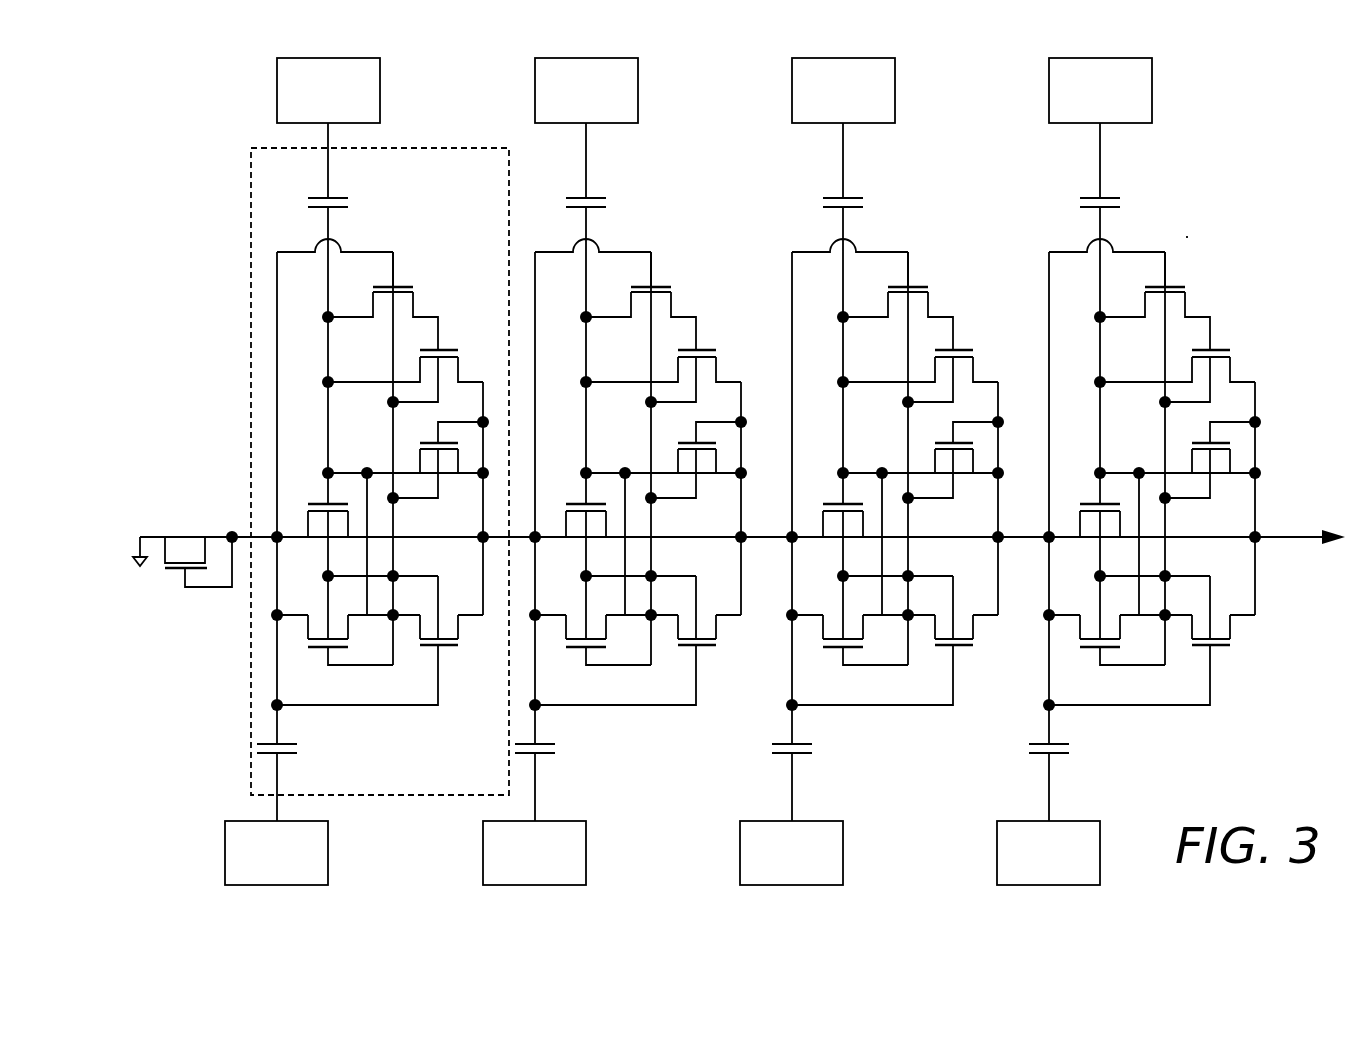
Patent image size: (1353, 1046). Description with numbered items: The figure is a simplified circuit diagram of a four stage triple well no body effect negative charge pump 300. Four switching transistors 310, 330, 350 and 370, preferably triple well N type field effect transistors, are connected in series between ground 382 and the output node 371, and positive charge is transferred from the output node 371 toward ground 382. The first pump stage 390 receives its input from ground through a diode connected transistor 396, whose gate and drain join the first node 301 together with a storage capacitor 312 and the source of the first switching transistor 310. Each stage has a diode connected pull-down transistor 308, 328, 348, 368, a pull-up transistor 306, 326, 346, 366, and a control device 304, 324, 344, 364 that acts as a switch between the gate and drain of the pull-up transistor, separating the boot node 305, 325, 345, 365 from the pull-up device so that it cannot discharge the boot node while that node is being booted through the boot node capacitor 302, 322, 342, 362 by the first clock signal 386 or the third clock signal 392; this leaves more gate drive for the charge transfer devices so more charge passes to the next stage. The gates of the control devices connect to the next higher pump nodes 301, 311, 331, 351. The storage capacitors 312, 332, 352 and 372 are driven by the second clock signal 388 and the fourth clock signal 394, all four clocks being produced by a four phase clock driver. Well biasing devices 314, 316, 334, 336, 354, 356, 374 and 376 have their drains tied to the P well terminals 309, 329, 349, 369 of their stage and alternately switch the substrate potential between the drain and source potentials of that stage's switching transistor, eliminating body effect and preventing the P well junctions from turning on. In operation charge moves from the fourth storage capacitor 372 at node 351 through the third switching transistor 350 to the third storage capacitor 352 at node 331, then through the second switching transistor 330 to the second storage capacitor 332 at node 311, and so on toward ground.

The negative charge pump 300 is at (1184, 241).
The node 301 is at (231, 536).
The boot node capacitor 302 is at (330, 181).
The control device 304 is at (384, 301).
The boot node 305 is at (328, 456).
The pull-up transistor 306 is at (416, 363).
The pull-down transistor 308 is at (438, 457).
The P well terminals 309 is at (393, 557).
The switching transistor 310 is at (317, 522).
The node 311 is at (446, 537).
The storage capacitor 312 is at (290, 763).
The well biasing device 314 is at (341, 633).
The well biasing device 316 is at (382, 640).
The boot node capacitor 322 is at (588, 181).
The control device 324 is at (642, 301).
The boot node 325 is at (608, 427).
The pull-up transistor 326 is at (674, 363).
The pull-down transistor 328 is at (696, 457).
The P well terminals 329 is at (693, 537).
The switching transistor 330 is at (575, 522).
The node 331 is at (764, 544).
The storage capacitor 332 is at (548, 763).
The well biasing device 334 is at (599, 633).
The well biasing device 336 is at (640, 640).
The boot node capacitor 342 is at (845, 181).
The control device 344 is at (899, 301).
The boot node 345 is at (865, 427).
The pull-up transistor 346 is at (931, 363).
The pull-down transistor 348 is at (953, 457).
The P well terminals 349 is at (950, 537).
The switching transistor 350 is at (832, 522).
The node 351 is at (1021, 544).
The storage capacitor 352 is at (805, 763).
The well biasing device 354 is at (856, 633).
The well biasing device 356 is at (897, 640).
The boot node capacitor 362 is at (1102, 181).
The control device 364 is at (1156, 301).
The boot node 365 is at (1122, 427).
The pull-up transistor 366 is at (1188, 363).
The pull-down transistor 368 is at (1210, 457).
The P well terminals 369 is at (1207, 537).
The switching transistor 370 is at (1089, 522).
The VOUT 371 is at (1297, 544).
The storage capacitor 372 is at (1062, 763).
The well biasing device 374 is at (1113, 633).
The well biasing device 376 is at (1154, 640).
The ground 382 is at (145, 536).
The CLOCK 1 signal 386 is at (586, 90).
The CLOCK 2 signal 388 is at (534, 853).
The first pump stage 390 is at (433, 148).
The CLOCK 3 signal 392 is at (843, 90).
The CLOCK 4 signal 394 is at (791, 853).
The diode connected transistor 396 is at (198, 574).